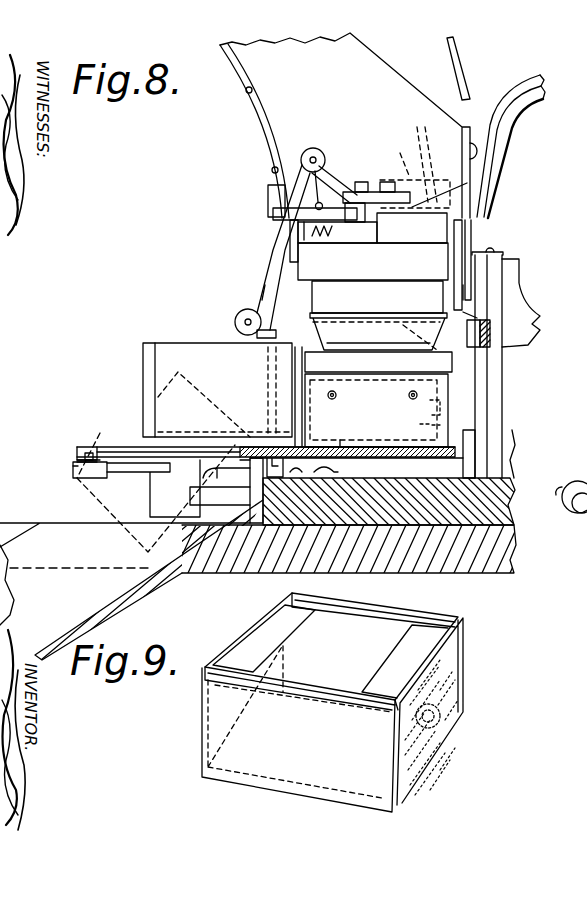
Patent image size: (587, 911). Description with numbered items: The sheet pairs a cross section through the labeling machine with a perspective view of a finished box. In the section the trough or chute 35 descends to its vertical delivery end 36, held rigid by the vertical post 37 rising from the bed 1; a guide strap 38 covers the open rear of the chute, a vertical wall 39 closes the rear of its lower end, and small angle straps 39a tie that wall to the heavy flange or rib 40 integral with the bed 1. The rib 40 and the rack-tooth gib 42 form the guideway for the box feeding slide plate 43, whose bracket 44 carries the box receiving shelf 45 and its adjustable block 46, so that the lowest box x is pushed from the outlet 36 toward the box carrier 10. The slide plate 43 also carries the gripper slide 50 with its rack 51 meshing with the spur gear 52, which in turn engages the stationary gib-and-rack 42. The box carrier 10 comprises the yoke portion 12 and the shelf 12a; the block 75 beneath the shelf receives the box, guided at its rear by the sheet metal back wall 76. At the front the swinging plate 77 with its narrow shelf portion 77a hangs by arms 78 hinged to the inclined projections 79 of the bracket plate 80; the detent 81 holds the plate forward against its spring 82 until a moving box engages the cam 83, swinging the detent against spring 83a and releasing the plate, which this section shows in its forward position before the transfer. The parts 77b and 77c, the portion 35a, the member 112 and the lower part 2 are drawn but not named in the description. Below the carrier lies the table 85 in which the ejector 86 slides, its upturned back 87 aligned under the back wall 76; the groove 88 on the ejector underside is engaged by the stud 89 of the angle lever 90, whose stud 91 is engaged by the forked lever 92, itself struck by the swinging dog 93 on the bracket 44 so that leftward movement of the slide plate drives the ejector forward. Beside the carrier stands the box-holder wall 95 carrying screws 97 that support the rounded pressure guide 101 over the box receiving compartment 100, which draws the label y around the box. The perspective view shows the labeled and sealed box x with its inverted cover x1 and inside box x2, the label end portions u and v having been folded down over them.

In FIG. 8, the bed 1 is at (516, 482).
In FIG. 8, the base 2 is at (468, 577).
In FIG. 8, the box carrier 10 is at (439, 171).
In FIG. 8, the yoke portion 12 is at (508, 116).
In FIG. 8, the bracket supported shelf 12a is at (415, 159).
In FIG. 8, the trough or chute 35 is at (345, 125).
In FIG. 8, the inclined plate 35a is at (220, 580).
In FIG. 8, the delivery end of chute 36 is at (290, 262).
In FIG. 8, the vertical post 37 is at (268, 217).
In FIG. 8, the guide strap 38 is at (464, 56).
In FIG. 8, the vertical wall 39 is at (472, 178).
In FIG. 8, the angle straps 39a is at (490, 257).
In FIG. 8, the flange or rib 40 is at (532, 328).
In FIG. 8, the rack-tooth provided gib 42 is at (468, 457).
In FIG. 8, the box feeding slide plate 43 is at (482, 397).
In FIG. 8, the bracket 44 is at (466, 333).
In FIG. 8, the box receiving shelf 45 is at (377, 299).
In FIG. 8, the block 46 is at (377, 224).
In FIG. 8, the gripper slide 50 is at (488, 337).
In FIG. 8, the rack 51 is at (467, 320).
In FIG. 8, the spur gear 52 is at (468, 356).
In FIG. 8, the block 75 is at (373, 246).
In FIG. 8, the back wall 76 is at (460, 290).
In FIG. 8, the swinging plate 77 is at (267, 292).
In FIG. 8, the shelf portion 77a is at (266, 340).
In FIG. 8, the roller 77b is at (237, 316).
In FIG. 8, the phantom roller guide 77c is at (298, 385).
In FIG. 8, the arms 78 is at (268, 186).
In FIG. 8, the inclined projections 79 is at (341, 178).
In FIG. 8, the bracket plate 80 is at (372, 200).
In FIG. 8, the detent 81 is at (327, 227).
In FIG. 8, the spring 82 is at (325, 233).
In FIG. 8, the cam 83 is at (270, 278).
In FIG. 8, the spring 83a is at (309, 149).
In FIG. 8, the table 85 is at (416, 457).
In FIG. 8, the ejector 86 is at (130, 447).
In FIG. 8, the upwardly extending back 87 is at (303, 422).
In FIG. 8, the channel or groove 88 is at (90, 446).
In FIG. 8, the stud 89 is at (74, 466).
In FIG. 8, the angle lever 90 is at (150, 472).
In FIG. 8, the stud 91 is at (224, 404).
In FIG. 8, the lever 92 is at (346, 432).
In FIG. 8, the dog 93 is at (407, 420).
In FIG. 8, the box-holder wall 95 is at (376, 410).
In FIG. 8, the screws 97 is at (409, 397).
In FIG. 8, the box receiving compartment 100 is at (326, 385).
In FIG. 8, the rounded pressure guide 101 is at (378, 362).
In FIG. 8, the hopper 112 is at (378, 331).
In FIG. 8, the box x is at (143, 364).
In FIG. 9, the box x is at (332, 702).
In FIG. 9, the inverted box cover x1 is at (402, 614).
In FIG. 9, the inverted inside box x2 is at (342, 648).
In FIG. 9, the label end portion u is at (405, 661).
In FIG. 9, the label end portion v is at (264, 638).
In FIG. 9, the label y is at (428, 748).